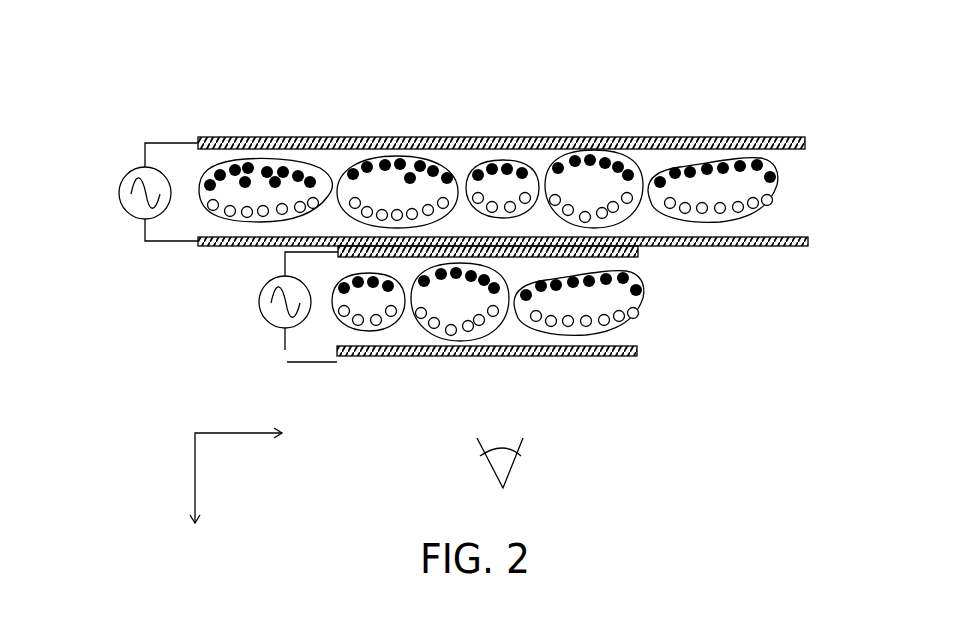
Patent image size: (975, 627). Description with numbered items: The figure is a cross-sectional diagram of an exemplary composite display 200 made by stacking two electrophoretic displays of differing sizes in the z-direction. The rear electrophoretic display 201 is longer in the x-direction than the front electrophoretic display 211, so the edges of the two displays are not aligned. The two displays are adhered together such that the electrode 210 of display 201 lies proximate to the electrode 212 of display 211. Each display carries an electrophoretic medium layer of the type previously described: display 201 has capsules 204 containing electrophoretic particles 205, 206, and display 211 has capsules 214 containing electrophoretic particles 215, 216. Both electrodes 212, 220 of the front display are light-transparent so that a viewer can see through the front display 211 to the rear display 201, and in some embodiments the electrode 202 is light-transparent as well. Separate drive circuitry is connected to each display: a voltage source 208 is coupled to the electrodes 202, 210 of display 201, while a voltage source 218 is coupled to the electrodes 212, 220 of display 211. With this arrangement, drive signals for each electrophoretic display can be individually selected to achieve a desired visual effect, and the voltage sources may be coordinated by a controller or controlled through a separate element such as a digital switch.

The composite display 200 is at (230, 113).
The electrophoretic display 201 is at (75, 138).
The electrode 202 is at (790, 245).
The capsules 204 is at (786, 192).
The electrophoretic particles 205 is at (778, 176).
The electrophoretic particles 206 is at (780, 203).
The voltage source 208 is at (126, 184).
The electrode 210 is at (806, 143).
The electrophoretic display 211 is at (210, 252).
The electrode 212 is at (633, 353).
The capsules 214 is at (648, 306).
The electrophoretic particles 215 is at (645, 288).
The electrophoretic particles 216 is at (640, 317).
The voltage source 218 is at (262, 299).
The electrode 220 is at (640, 251).